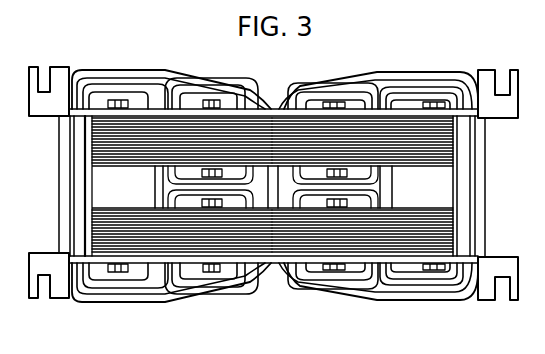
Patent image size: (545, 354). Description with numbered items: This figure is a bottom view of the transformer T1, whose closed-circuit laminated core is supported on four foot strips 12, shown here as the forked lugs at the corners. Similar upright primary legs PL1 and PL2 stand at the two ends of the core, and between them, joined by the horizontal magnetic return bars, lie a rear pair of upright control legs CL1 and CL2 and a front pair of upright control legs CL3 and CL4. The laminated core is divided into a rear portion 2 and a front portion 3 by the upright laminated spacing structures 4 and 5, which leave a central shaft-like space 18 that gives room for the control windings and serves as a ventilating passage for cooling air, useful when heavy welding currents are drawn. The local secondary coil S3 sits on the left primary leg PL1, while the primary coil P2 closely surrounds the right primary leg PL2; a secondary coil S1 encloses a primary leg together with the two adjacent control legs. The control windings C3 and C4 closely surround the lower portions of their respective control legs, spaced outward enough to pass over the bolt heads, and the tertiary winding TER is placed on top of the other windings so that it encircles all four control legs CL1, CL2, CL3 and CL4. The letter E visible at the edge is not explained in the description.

The transformer T1 is at (488, 54).
The foot strip 12 is at (62, 67).
The left primary leg PL1 is at (72, 214).
The right primary leg PL2 is at (442, 182).
The upright laminated spacing structure 4 is at (103, 182).
The front portion lamination assembly 3 is at (445, 140).
The upright laminated spacing structure 5 is at (443, 197).
The rear portion lamination assembly 2 is at (442, 238).
The central shaft-like space 18 is at (258, 180).
The rear control leg CL1 is at (215, 232).
The rear control leg CL2 is at (340, 236).
The front control leg CL3 is at (175, 154).
The front control leg CL4 is at (340, 152).
The secondary coil S1 is at (128, 71).
The local secondary coil S3 is at (100, 87).
The control winding C3 is at (177, 93).
The control winding C4 is at (333, 93).
The primary coil P2 is at (428, 92).
The tertiary winding TER is at (280, 82).
The edge E is at (540, 310).